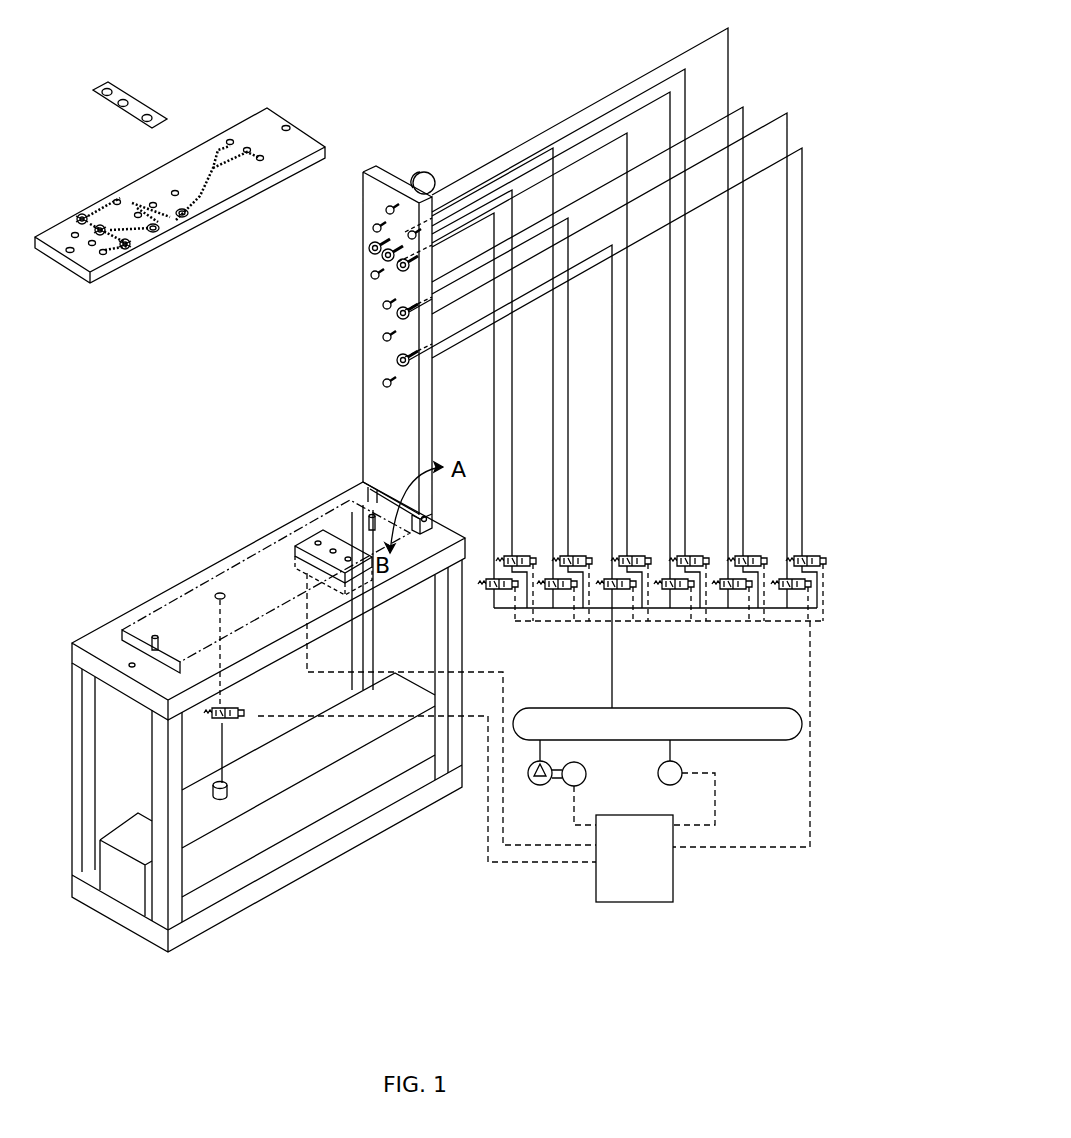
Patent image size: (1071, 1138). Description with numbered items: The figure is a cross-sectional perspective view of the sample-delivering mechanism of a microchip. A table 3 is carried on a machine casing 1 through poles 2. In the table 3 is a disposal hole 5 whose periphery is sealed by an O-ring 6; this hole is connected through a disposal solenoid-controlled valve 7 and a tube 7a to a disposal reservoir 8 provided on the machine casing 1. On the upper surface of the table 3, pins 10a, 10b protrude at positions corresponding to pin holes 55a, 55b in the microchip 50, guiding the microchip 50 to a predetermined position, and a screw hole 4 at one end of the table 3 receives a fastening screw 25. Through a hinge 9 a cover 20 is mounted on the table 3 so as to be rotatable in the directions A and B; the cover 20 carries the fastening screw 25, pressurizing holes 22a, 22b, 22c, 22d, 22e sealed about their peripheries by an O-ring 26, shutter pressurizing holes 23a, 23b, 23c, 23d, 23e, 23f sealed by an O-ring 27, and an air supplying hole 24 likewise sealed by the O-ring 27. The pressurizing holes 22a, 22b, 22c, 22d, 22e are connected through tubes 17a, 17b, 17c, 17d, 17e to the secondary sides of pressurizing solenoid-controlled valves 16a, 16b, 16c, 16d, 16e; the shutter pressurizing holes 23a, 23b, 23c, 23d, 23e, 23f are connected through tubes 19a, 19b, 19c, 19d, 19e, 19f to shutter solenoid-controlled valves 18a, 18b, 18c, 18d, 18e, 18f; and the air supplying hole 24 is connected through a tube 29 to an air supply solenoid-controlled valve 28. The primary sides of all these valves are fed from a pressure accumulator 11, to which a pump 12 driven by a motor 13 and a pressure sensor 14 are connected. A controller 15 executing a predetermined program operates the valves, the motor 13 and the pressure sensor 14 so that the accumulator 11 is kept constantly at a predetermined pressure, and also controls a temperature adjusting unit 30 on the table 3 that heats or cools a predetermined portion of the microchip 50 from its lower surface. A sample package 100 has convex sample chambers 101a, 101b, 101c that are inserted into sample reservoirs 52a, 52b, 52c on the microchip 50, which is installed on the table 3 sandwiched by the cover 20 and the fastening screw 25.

The machine casing 1 is at (205, 921).
The poles 2 is at (175, 862).
The table 3 is at (83, 643).
The screw hole 4 is at (130, 666).
The disposal hole 5 is at (221, 592).
The O-ring 6 is at (205, 588).
The disposal solenoid-controlled valve 7 is at (242, 728).
The tube 7a is at (214, 800).
The disposal reservoir 8 is at (125, 887).
The hinge 9 is at (430, 521).
The pin 10a is at (154, 637).
The pin 10b is at (370, 517).
The pressure accumulator 11 is at (776, 742).
The pump 12 is at (540, 786).
The motor 13 is at (586, 773).
The pressure sensor 14 is at (682, 772).
The controller 15 is at (637, 905).
The pressurizing solenoid-controlled valve 16a is at (490, 596).
The pressurizing solenoid-controlled valve 16b is at (514, 555).
The pressurizing solenoid-controlled valve 16c is at (556, 596).
The pressurizing solenoid-controlled valve 16d is at (570, 555).
The pressurizing solenoid-controlled valve 16e is at (616, 596).
The tube 17a is at (495, 430).
The tube 17b is at (512, 470).
The tube 17c is at (554, 430).
The tube 17d is at (569, 470).
The tube 17e is at (613, 430).
The shutter solenoid-controlled valve 18a is at (673, 596).
The shutter solenoid-controlled valve 18b is at (687, 555).
The shutter solenoid-controlled valve 18c is at (731, 596).
The shutter solenoid-controlled valve 18d is at (745, 555).
The shutter solenoid-controlled valve 18e is at (790, 596).
The shutter solenoid-controlled valve 18f is at (804, 555).
The tube 19a is at (671, 430).
The tube 19b is at (686, 470).
The tube 19c is at (729, 430).
The tube 19d is at (744, 470).
The tube 19e is at (788, 430).
The tube 19f is at (803, 470).
The cover 20 is at (377, 177).
The pressurizing hole 22a is at (398, 270).
The pressurizing hole 22b is at (382, 258).
The pressurizing hole 22c is at (369, 249).
The pressurizing hole 22d is at (398, 318).
The pressurizing hole 22e is at (398, 365).
The shutter pressurizing hole 23a is at (409, 230).
The shutter pressurizing hole 23b is at (386, 211).
The shutter pressurizing hole 23c is at (373, 229).
The shutter pressurizing hole 23d is at (383, 309).
The shutter pressurizing hole 23e is at (383, 341).
The shutter pressurizing hole 23f is at (383, 387).
The air supplying hole 24 is at (371, 278).
The fastening screw 25 is at (408, 176).
The O-ring 26 is at (425, 315).
The O-ring 27 is at (425, 372).
The air supply solenoid-controlled valve 28 is at (629, 555).
The tube 29 is at (628, 348).
The temperature adjusting unit 30 is at (360, 584).
The microchip 50 is at (197, 127).
The sample reservoir 52a is at (128, 248).
The sample reservoir 52b is at (100, 236).
The sample reservoir 52c is at (80, 214).
The pin hole 55a is at (70, 253).
The pin hole 55b is at (286, 125).
The sample package 100 is at (123, 82).
The sample chamber 101a is at (147, 123).
The sample chamber 101b is at (118, 106).
The sample chamber 101c is at (102, 93).